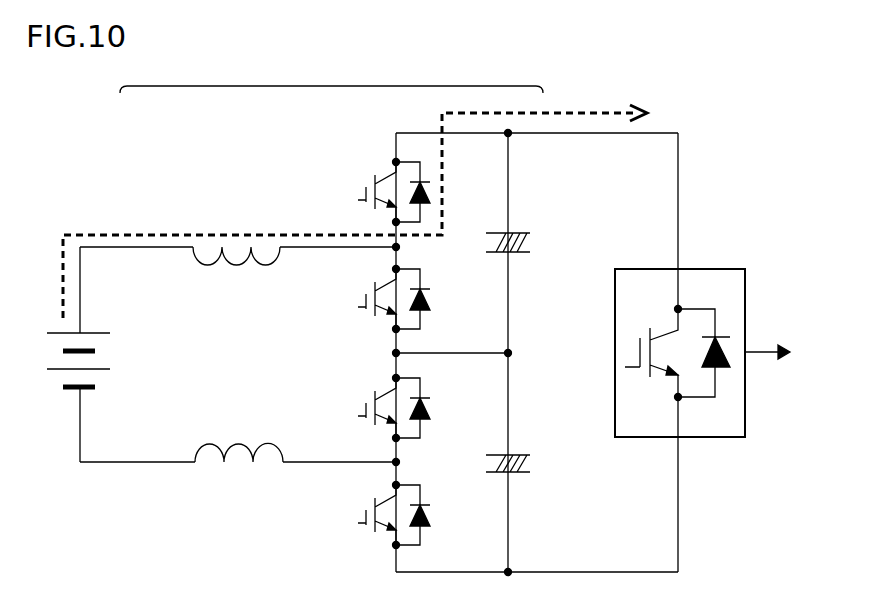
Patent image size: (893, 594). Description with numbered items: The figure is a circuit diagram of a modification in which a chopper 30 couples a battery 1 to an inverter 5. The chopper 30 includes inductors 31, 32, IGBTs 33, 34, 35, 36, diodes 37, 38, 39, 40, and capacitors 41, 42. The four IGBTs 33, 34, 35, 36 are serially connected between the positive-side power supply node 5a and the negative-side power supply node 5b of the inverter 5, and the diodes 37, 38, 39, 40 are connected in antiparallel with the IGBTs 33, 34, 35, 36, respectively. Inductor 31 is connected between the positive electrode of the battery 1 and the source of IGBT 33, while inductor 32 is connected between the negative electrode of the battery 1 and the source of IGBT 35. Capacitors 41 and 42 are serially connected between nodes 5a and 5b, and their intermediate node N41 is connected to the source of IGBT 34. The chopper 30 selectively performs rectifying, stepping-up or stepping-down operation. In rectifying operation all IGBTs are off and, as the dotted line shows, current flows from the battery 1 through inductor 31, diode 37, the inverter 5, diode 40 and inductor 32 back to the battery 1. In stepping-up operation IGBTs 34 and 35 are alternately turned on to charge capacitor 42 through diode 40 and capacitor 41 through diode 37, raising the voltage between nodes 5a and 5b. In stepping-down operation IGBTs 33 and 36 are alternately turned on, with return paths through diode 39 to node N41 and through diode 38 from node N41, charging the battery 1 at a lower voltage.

The battery 1 is at (57, 333).
The inverter 5 is at (746, 287).
The positive-side power supply node 5a is at (681, 269).
The negative-side power supply node 5b is at (681, 437).
The chopper 30 is at (331, 75).
The inductor 31 is at (236, 268).
The inductor 32 is at (241, 466).
The IGBT 33 is at (357, 190).
The IGBT 34 is at (359, 297).
The IGBT 35 is at (361, 405).
The IGBT 36 is at (362, 512).
The diode 37 is at (431, 190).
The diode 38 is at (431, 298).
The diode 39 is at (431, 406).
The diode 40 is at (431, 513).
The capacitor 41 is at (523, 233).
The capacitor 42 is at (530, 455).
The intermediate node N41 is at (514, 353).